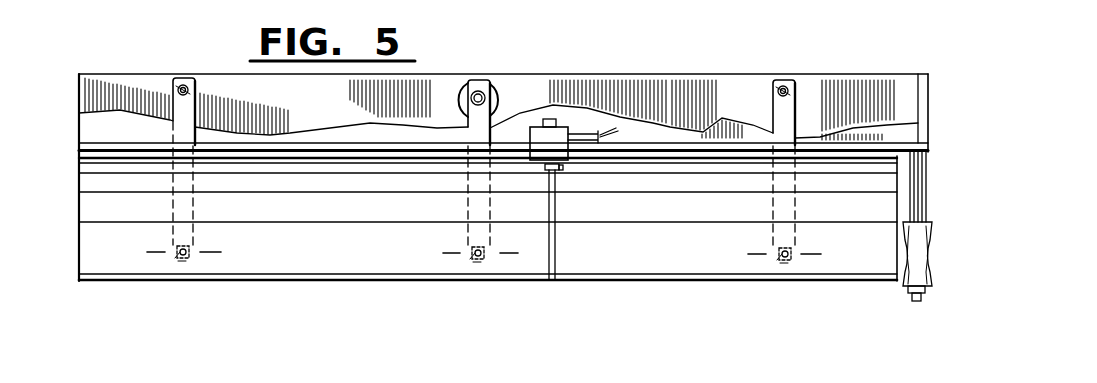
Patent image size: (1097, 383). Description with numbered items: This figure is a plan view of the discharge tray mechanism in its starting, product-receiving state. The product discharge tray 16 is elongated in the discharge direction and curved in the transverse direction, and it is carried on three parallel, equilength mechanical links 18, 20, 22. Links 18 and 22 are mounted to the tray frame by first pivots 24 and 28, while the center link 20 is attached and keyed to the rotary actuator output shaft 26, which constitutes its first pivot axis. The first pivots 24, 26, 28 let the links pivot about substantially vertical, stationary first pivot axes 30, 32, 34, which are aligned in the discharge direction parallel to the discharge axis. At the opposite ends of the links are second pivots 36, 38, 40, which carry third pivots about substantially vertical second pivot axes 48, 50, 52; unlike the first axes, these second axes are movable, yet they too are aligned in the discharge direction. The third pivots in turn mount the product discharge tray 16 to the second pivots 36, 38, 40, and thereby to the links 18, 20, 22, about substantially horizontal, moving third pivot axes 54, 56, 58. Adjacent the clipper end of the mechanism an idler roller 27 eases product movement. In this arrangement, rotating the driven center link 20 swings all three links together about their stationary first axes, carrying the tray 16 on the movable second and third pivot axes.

The product discharge tray 16 is at (640, 250).
The mechanical link 18 is at (185, 113).
The mechanical link 20 is at (482, 122).
The mechanical link 22 is at (787, 118).
The first pivot 24 is at (183, 78).
The output shaft / first pivot axis 26 is at (481, 90).
The idler roller 27 is at (916, 262).
The first pivot 28 is at (784, 83).
The first pivot axis 30 is at (180, 84).
The first pivot axis 32 is at (474, 92).
The first pivot axis 34 is at (780, 86).
The second pivot 36 is at (183, 262).
The second pivot 38 is at (478, 264).
The second pivot 40 is at (786, 265).
The second pivot axis 48 is at (170, 266).
The second pivot axis 50 is at (466, 267).
The second pivot axis 52 is at (775, 266).
The third pivot axis 54 is at (208, 253).
The third pivot axis 56 is at (508, 254).
The third pivot axis 58 is at (810, 256).